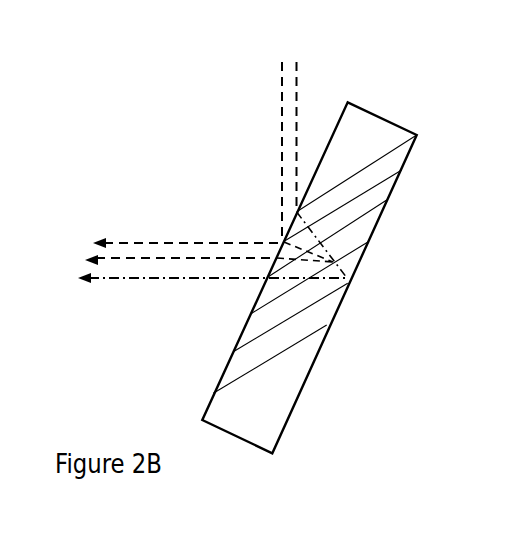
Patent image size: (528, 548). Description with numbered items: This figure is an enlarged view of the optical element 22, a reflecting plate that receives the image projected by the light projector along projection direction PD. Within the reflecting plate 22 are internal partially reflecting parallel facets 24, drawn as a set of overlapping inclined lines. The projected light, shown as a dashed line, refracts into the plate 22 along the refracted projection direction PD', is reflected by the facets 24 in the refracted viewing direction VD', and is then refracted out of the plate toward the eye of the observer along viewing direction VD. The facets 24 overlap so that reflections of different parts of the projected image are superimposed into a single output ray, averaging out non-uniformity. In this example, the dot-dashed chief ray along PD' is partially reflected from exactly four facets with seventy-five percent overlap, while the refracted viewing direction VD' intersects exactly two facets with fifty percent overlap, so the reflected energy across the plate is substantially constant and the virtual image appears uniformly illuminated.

The optical element 22 is at (309, 266).
The internal partially reflecting parallel facets 24 is at (293, 355).
The projection direction PD is at (273, 152).
The viewing direction VD is at (212, 248).
The refracted projection direction PD' is at (389, 245).
The refracted viewing direction VD' is at (262, 277).